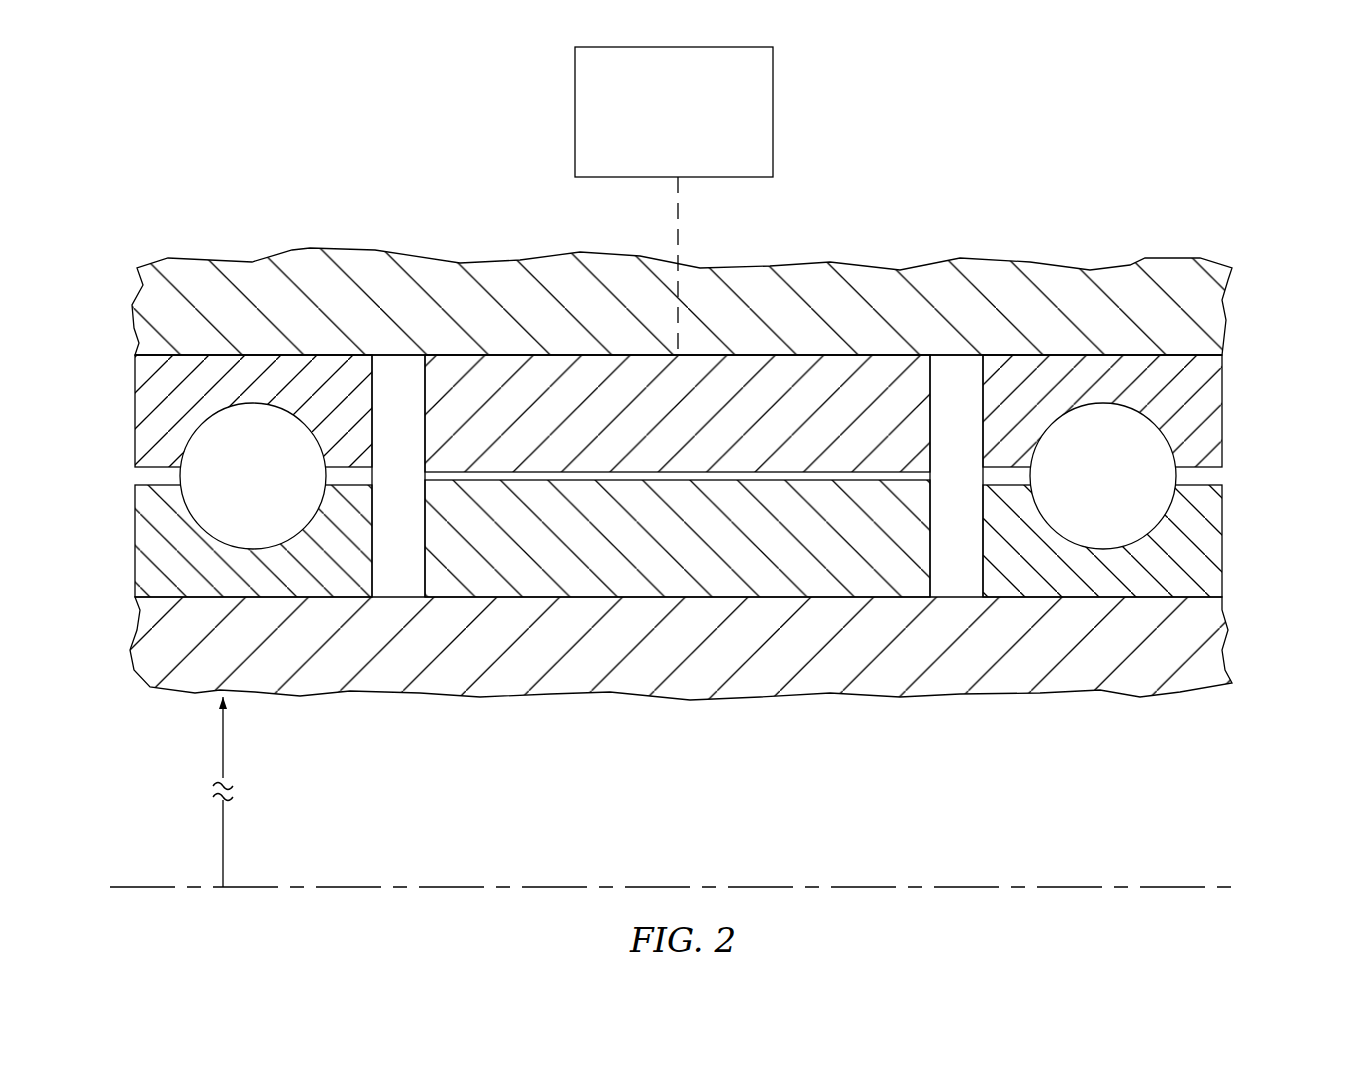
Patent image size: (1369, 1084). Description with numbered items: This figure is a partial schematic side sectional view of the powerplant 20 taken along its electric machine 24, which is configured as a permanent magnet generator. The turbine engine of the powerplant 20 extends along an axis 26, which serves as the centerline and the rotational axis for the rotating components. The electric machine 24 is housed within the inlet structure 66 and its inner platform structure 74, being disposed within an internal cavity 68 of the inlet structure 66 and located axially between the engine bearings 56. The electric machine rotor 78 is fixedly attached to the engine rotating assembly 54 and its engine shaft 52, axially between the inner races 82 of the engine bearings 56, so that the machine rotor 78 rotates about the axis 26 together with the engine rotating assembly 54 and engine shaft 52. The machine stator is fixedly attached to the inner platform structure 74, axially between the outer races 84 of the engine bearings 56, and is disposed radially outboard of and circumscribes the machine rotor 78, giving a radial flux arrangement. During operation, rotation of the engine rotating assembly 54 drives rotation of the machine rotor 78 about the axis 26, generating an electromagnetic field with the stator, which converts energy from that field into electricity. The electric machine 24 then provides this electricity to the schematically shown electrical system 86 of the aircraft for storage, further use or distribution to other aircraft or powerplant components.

The powerplant 20 is at (145, 224).
The electric machine 24 is at (786, 349).
The axis 26 is at (125, 886).
The engine shaft 52 is at (747, 648).
The engine rotating assembly 54 is at (1236, 650).
The engine bearings 56 is at (124, 450).
The inlet structure 66 is at (701, 263).
The internal cavity 68 is at (398, 376).
The inner platform structure 74 is at (1183, 256).
The electric machine rotor 78 is at (650, 559).
The inner races 82 is at (135, 545).
The outer races 84 is at (135, 401).
The electrical system 86 is at (662, 157).